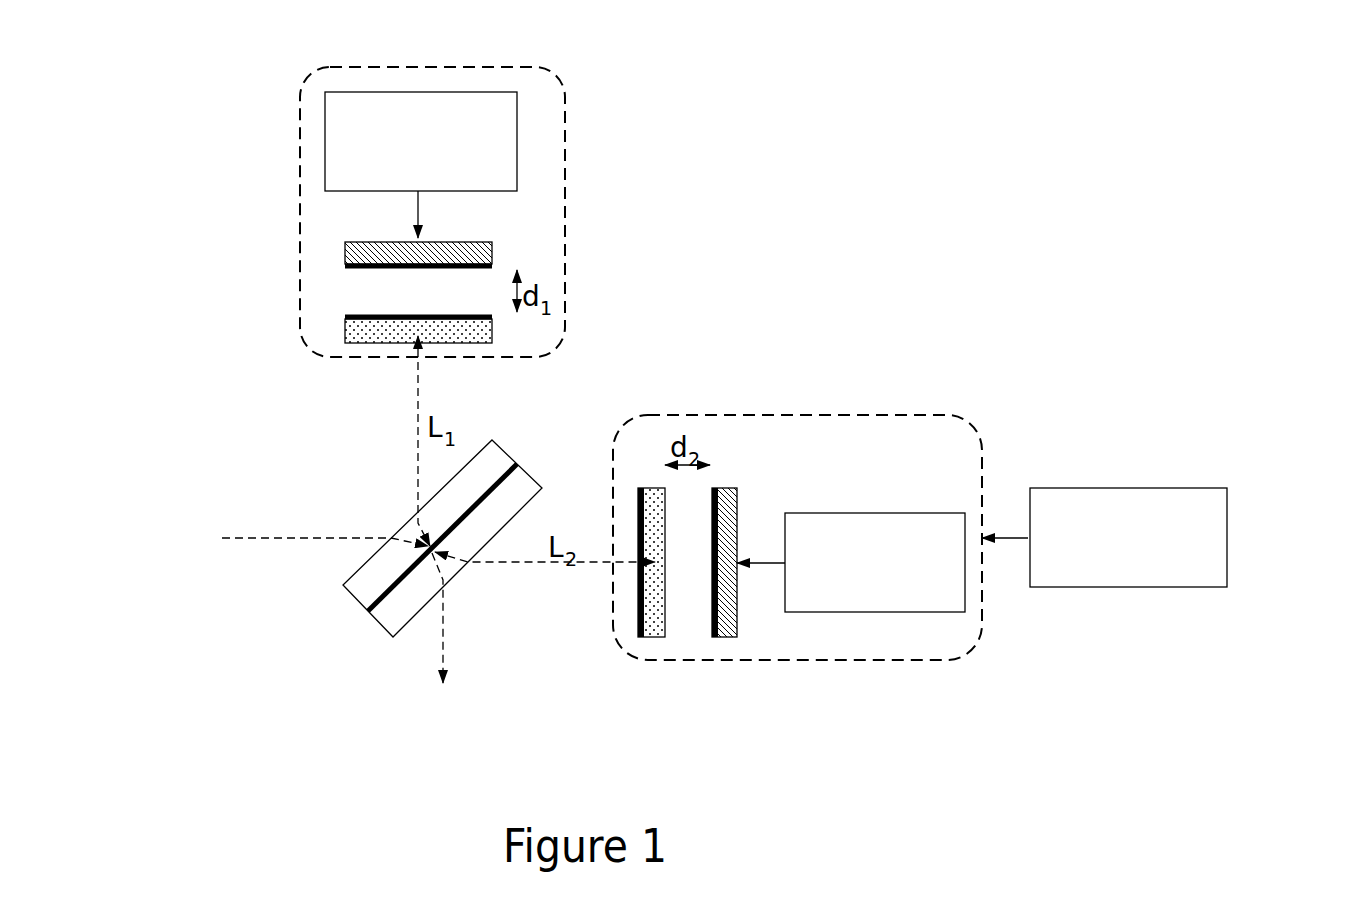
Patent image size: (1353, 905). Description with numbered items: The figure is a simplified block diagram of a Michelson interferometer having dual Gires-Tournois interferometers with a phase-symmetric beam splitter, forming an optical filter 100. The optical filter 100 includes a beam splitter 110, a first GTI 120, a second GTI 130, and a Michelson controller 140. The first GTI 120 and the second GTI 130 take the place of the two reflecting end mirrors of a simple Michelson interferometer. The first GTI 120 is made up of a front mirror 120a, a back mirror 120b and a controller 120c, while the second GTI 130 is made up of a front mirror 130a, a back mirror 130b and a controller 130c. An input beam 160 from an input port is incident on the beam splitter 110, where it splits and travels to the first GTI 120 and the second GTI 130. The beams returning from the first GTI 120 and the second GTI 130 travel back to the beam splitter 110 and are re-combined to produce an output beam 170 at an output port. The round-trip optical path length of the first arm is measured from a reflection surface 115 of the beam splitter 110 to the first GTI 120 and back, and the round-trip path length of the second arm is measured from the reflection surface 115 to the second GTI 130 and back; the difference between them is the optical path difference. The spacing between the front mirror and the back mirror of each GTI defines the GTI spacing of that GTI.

The optical filter 100 is at (1228, 343).
The beam splitter 110 is at (348, 602).
The reflection surface 115 is at (372, 613).
The first GTI 120 is at (565, 132).
The GTI 1 front mirror 120a is at (345, 318).
The GTI 1 back mirror 120b is at (345, 267).
The GTI 1 controller 120c is at (325, 139).
The second GTI 130 is at (847, 405).
The GTI 2 front mirror 130a is at (642, 637).
The GTI 2 back mirror 130b is at (721, 637).
The GTI 2 controller 130c is at (895, 612).
The Michelson controller 140 is at (1139, 587).
The input beam 160 is at (251, 523).
The output beam 170 is at (475, 645).